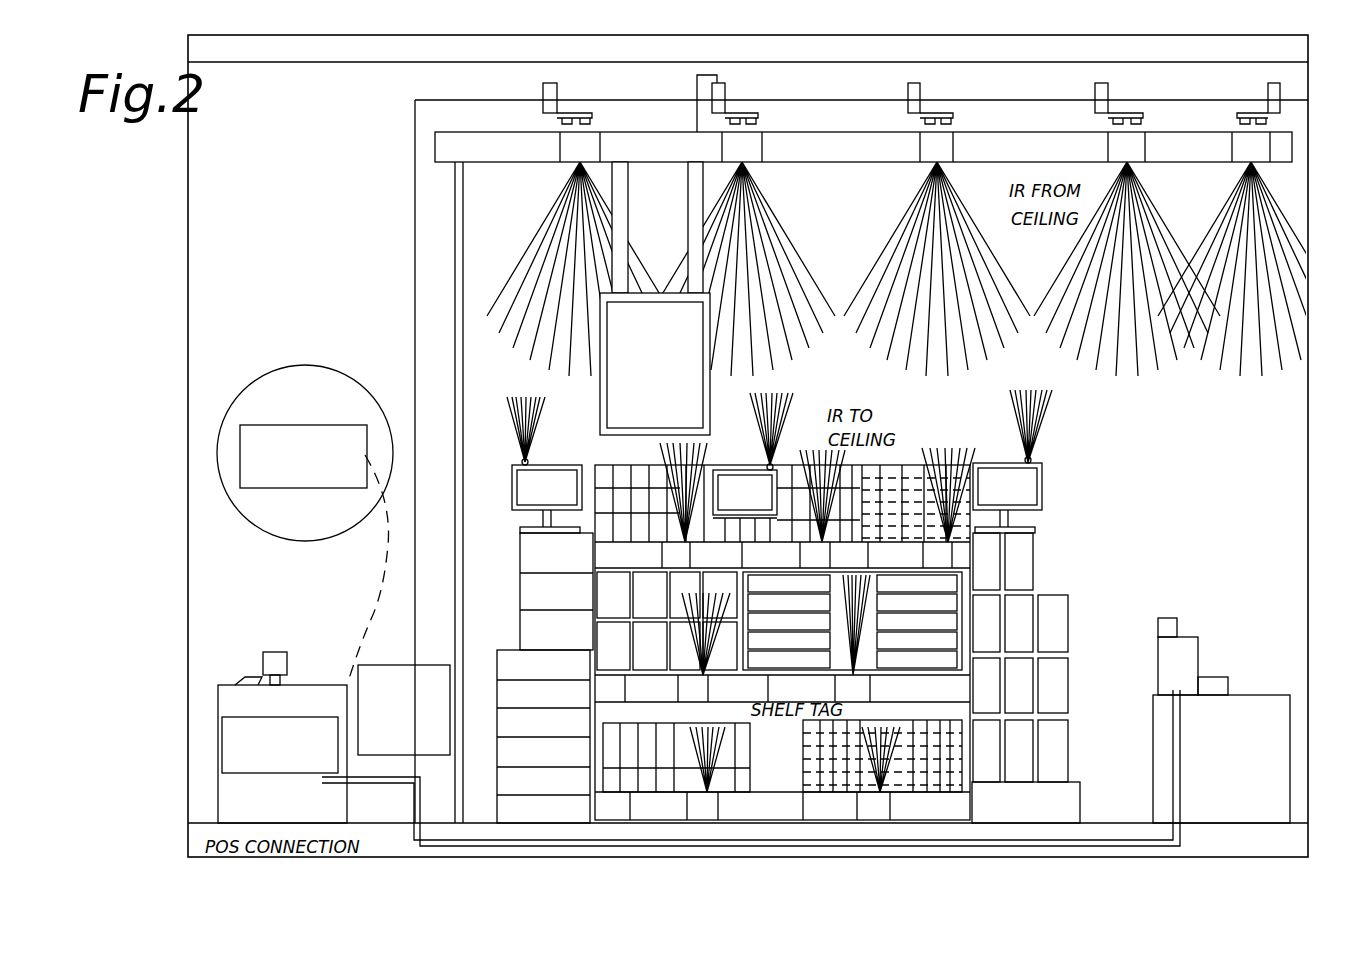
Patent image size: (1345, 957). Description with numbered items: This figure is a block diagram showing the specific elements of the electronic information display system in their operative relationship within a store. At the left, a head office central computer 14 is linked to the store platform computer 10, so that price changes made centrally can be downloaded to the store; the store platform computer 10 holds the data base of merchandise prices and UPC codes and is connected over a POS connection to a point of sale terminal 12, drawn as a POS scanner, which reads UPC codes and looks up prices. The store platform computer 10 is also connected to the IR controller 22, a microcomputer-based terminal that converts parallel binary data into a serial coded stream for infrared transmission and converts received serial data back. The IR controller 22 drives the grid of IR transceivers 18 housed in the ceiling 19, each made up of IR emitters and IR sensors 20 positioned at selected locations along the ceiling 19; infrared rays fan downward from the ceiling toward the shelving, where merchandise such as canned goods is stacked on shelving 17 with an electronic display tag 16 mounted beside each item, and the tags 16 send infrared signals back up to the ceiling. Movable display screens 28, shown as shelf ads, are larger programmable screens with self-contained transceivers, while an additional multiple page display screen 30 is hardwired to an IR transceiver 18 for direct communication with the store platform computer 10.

The store platform computer 10 is at (340, 808).
The point of sale terminal 12 is at (1170, 652).
The central computer 14 is at (275, 488).
The electronic display tag 16 is at (600, 548).
The shelf stock 17 is at (958, 690).
The IR transceiver 18 is at (543, 103).
The ceiling 19 is at (1283, 150).
The IR emitters and IR sensors 20 is at (575, 113).
The IR controller 22 is at (390, 665).
The movable display screen 28 is at (515, 477).
The additional display screen 30 is at (607, 305).